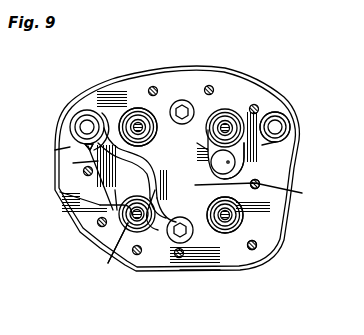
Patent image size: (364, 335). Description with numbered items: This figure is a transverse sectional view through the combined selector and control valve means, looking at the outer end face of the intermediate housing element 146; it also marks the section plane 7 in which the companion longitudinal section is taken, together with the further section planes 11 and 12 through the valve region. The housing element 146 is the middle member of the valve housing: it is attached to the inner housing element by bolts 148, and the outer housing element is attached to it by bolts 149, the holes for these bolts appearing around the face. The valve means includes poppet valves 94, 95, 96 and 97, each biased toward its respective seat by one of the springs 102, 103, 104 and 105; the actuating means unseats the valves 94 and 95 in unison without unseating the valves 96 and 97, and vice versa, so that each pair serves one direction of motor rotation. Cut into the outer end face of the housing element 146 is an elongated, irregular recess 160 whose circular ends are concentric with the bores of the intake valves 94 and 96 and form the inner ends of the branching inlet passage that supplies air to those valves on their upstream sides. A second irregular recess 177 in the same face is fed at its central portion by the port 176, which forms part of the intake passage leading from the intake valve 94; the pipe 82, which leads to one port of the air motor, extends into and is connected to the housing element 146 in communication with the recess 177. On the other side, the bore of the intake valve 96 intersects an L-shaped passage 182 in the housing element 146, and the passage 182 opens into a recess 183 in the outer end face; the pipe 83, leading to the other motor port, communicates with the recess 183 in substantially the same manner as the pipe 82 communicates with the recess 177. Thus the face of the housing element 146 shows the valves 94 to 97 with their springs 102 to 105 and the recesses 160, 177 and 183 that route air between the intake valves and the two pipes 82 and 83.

The section line 7- 7 is at (225, 118).
The section line 11- 11 is at (138, 172).
The section line 12- 12 is at (244, 90).
The pipe 82 is at (72, 125).
The pipe 83 is at (285, 117).
The poppet valve 94 is at (129, 118).
The poppet valve 95 is at (259, 112).
The poppet valve 96 is at (228, 226).
The poppet valve 97 is at (116, 256).
The spring 102 is at (127, 125).
The spring 103 is at (217, 123).
The spring 104 is at (232, 216).
The spring 105 is at (112, 212).
The housing element 146 is at (199, 270).
The bolts 148 is at (183, 100).
The bolts 149 is at (253, 250).
The elongated irregular recess 160 is at (302, 193).
The port 176 is at (73, 164).
The irregular recess 177 is at (86, 146).
The L-shaped passage 182 is at (228, 163).
The recess 183 is at (235, 172).